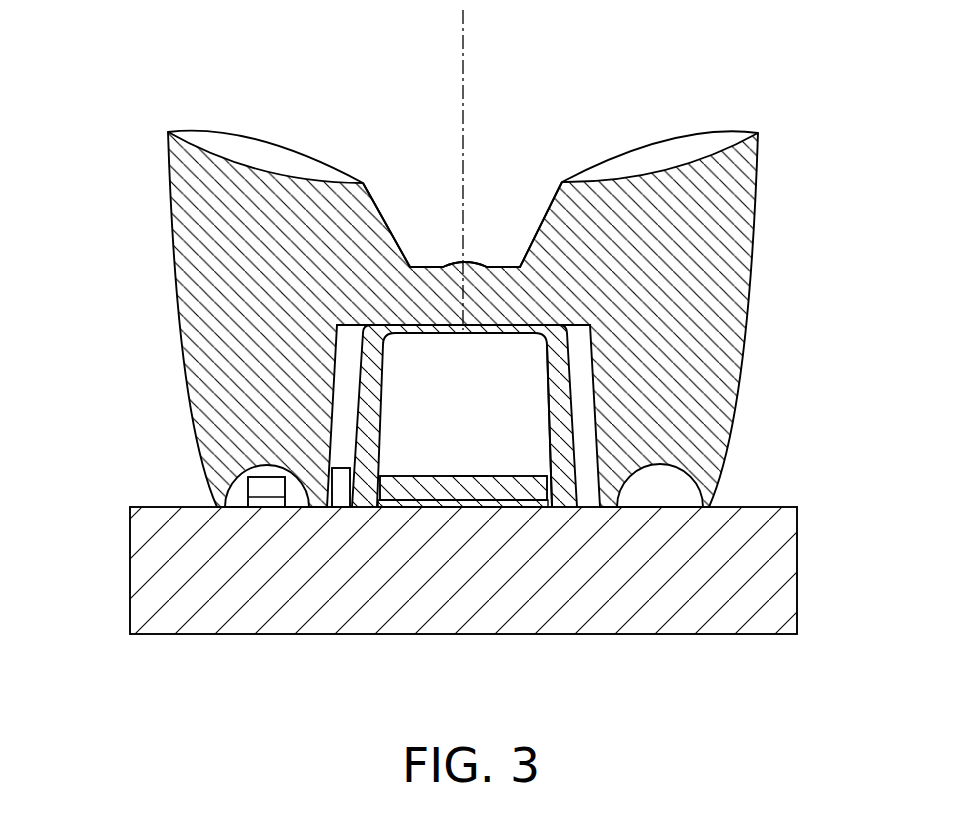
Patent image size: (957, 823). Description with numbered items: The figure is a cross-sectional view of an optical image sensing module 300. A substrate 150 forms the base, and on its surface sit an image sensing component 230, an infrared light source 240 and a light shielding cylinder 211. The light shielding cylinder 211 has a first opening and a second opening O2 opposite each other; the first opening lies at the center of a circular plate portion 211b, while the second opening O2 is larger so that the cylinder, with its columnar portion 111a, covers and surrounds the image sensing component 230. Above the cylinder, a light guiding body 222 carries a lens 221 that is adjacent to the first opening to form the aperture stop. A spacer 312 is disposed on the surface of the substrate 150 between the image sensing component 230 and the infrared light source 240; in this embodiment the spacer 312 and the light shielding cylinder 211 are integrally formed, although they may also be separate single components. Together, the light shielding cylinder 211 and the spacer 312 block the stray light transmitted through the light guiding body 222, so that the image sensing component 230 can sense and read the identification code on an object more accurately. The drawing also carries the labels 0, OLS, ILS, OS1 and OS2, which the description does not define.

The optical axis 0 is at (463, 18).
The light guiding body 222 is at (680, 258).
The outer lens surface OLS is at (270, 135).
The lens 221 is at (445, 258).
The second optical surface OS2 is at (470, 322).
The inner lens surface ILS is at (268, 474).
The infrared light source 240 is at (257, 490).
The spacer 312 is at (342, 492).
The light shielding cylinder 211 is at (877, 287).
The circular plate portion 211b is at (530, 322).
The columnar portion 111a is at (560, 430).
The first optical surface OS1 is at (411, 334).
The image sensing component 230 is at (533, 490).
The second opening O2 is at (494, 441).
The substrate 150 is at (733, 578).
The optical image sensing module 300 is at (880, 723).